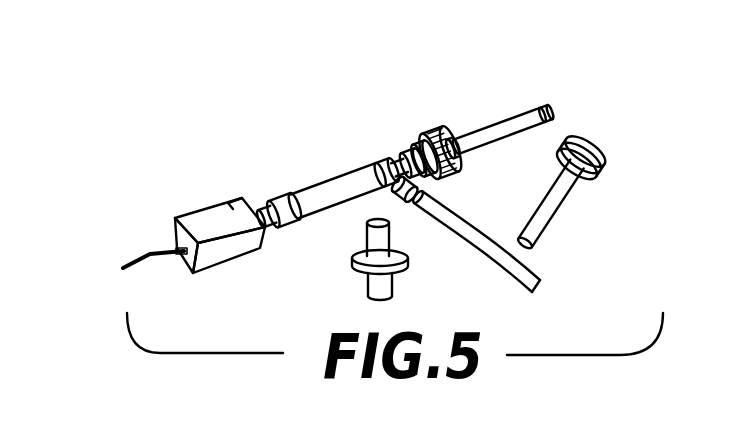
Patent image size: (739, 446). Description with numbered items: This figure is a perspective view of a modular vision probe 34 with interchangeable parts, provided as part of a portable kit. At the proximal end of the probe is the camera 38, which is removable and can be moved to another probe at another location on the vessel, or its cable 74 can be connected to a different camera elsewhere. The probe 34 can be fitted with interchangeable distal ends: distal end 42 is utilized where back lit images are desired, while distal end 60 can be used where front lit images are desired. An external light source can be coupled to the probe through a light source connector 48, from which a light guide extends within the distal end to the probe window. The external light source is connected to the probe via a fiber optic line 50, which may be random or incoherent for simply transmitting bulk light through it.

The vision probe 34 is at (333, 183).
The camera 38 is at (196, 221).
The distal end 42 is at (490, 120).
The light source connector 48 is at (402, 190).
The fiber optic line 50 is at (541, 281).
The distal end 60 is at (566, 196).
The cable 74 is at (131, 253).